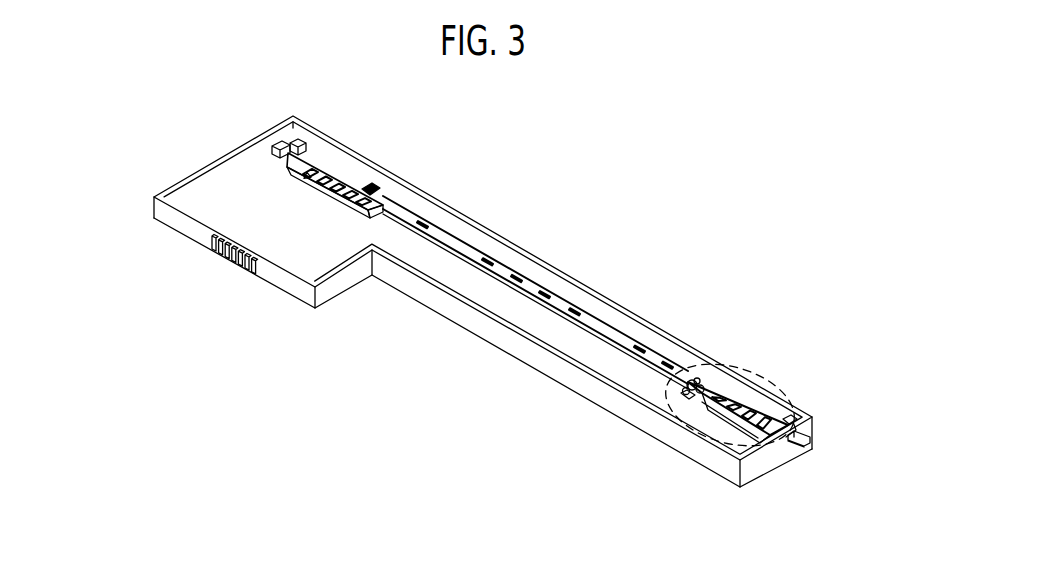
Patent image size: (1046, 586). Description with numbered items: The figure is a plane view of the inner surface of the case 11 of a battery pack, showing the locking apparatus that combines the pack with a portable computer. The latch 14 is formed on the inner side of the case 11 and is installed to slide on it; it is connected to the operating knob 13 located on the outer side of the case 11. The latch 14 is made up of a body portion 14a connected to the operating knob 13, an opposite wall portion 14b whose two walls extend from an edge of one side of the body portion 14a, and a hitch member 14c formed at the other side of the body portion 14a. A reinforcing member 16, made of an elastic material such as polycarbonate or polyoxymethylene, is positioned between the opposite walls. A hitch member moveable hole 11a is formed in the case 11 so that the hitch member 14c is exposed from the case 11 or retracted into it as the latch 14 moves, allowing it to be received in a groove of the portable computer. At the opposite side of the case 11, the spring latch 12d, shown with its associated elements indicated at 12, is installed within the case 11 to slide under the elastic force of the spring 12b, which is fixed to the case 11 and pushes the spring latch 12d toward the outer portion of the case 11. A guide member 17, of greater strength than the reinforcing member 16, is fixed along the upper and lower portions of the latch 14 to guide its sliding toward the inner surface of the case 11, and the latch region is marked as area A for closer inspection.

The case 11 is at (507, 305).
The hitch member moveable hole 11a is at (797, 443).
The first connector 12 is at (308, 182).
The spring 12b is at (370, 185).
The spring latch 12d is at (287, 174).
The operating knob 13 is at (730, 433).
The latch 14 is at (779, 355).
The body portion 14a is at (750, 383).
The opposite wall portion 14b is at (717, 372).
The hitch member 14c is at (827, 382).
The reinforcing member 16 is at (720, 380).
The guide member 17 is at (687, 397).
The detail region A is at (702, 427).